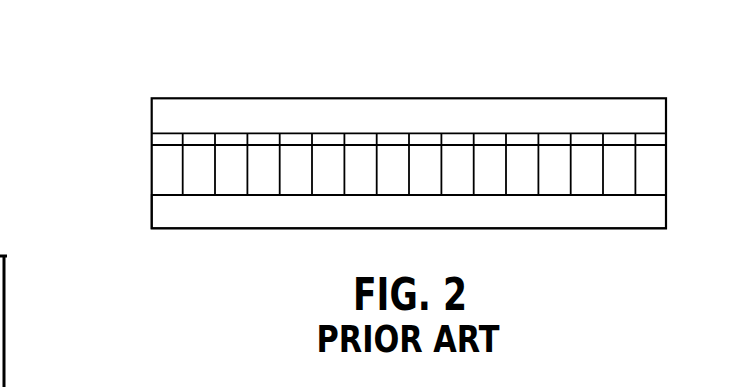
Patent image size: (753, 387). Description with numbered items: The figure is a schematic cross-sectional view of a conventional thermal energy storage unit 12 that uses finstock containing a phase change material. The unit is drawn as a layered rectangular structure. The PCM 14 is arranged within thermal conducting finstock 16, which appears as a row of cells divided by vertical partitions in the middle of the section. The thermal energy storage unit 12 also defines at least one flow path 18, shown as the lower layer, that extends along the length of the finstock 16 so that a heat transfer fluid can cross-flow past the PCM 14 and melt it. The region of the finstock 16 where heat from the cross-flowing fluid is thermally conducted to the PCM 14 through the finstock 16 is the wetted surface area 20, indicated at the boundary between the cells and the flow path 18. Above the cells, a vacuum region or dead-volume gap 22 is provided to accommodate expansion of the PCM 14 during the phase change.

The thermal energy storage unit 12 is at (226, 88).
The dead-volume gap 22 is at (150, 137).
The finstock 16 is at (150, 157).
The PCM 14 is at (168, 172).
The flow path 18 is at (168, 212).
The wetted surface area 20 is at (558, 199).